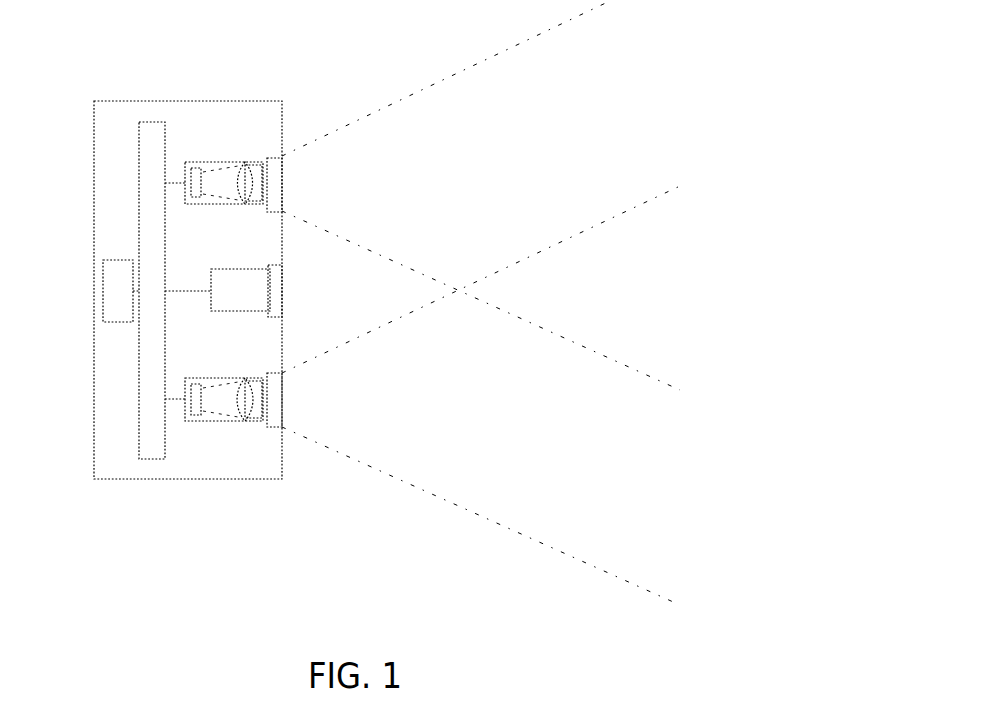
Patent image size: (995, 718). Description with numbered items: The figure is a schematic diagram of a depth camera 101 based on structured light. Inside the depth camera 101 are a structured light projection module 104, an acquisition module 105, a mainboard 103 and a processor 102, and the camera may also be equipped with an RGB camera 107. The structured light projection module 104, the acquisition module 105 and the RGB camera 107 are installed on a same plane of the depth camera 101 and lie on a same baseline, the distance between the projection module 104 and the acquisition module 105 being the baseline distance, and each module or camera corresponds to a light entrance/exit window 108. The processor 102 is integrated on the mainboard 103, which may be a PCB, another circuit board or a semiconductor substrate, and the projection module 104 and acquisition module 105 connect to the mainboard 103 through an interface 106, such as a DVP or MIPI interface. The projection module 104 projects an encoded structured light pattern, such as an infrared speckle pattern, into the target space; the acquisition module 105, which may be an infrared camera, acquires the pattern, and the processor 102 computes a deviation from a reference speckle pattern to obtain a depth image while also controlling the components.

The depth camera 101 is at (187, 101).
The processor 102 is at (102, 302).
The mainboard 103 is at (139, 188).
The structured light projection module 104 is at (227, 162).
The acquisition module 105 is at (212, 421).
The interface 106 is at (172, 399).
The RGB camera 107 is at (255, 279).
The light entrance/exit window 108 is at (278, 180).